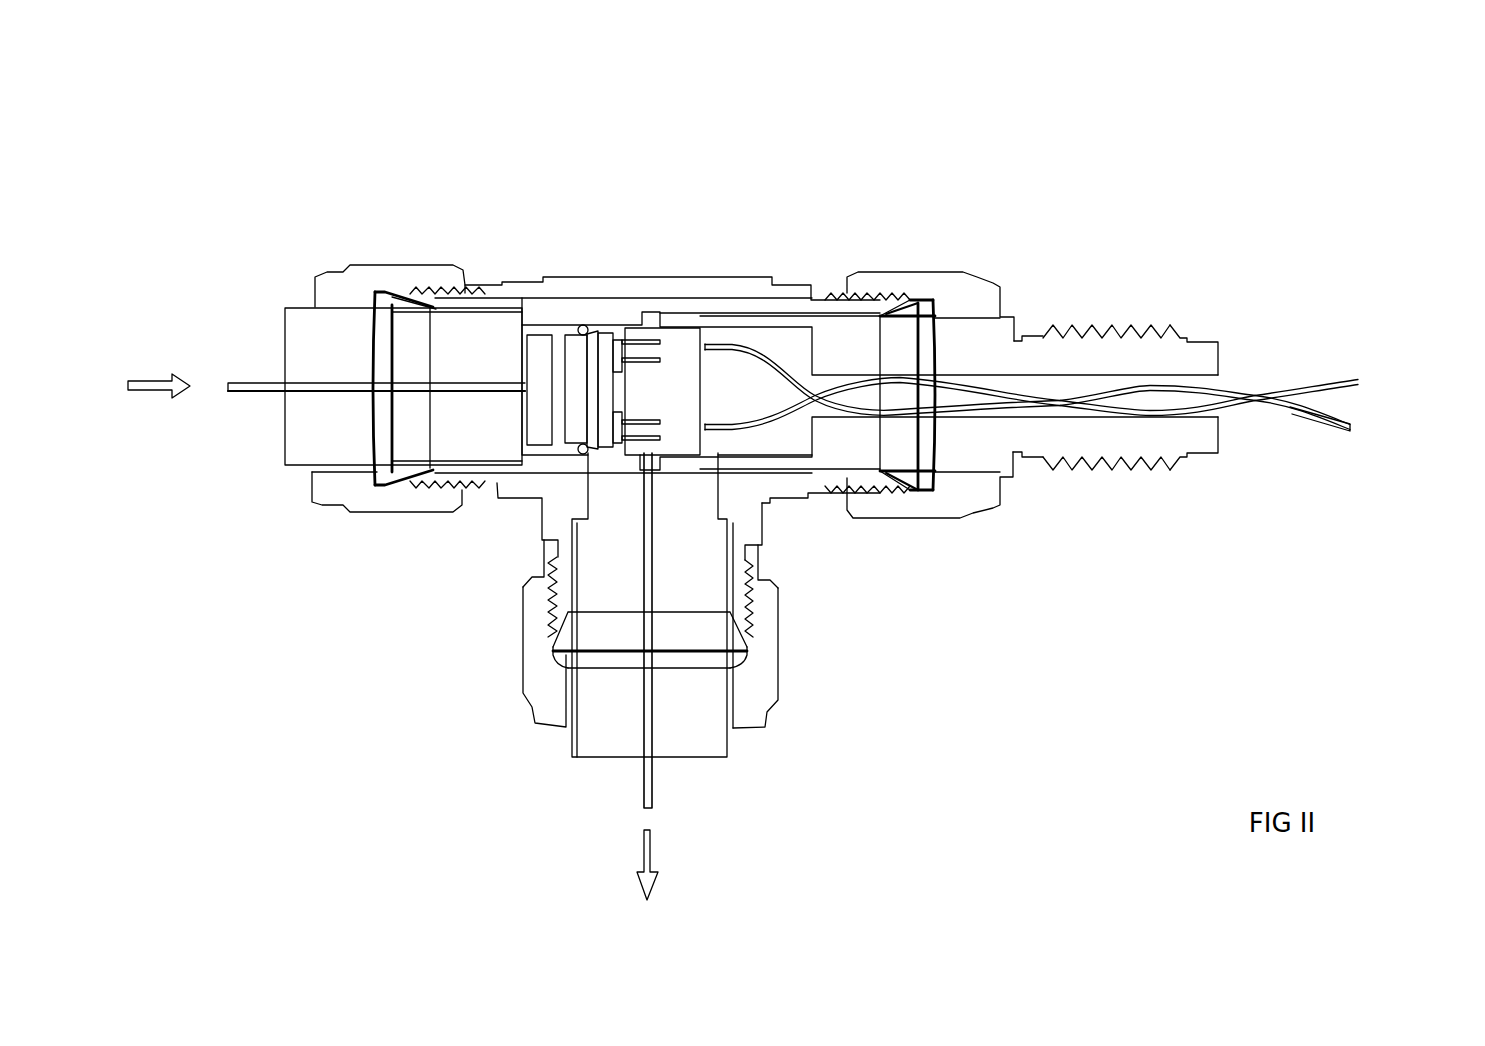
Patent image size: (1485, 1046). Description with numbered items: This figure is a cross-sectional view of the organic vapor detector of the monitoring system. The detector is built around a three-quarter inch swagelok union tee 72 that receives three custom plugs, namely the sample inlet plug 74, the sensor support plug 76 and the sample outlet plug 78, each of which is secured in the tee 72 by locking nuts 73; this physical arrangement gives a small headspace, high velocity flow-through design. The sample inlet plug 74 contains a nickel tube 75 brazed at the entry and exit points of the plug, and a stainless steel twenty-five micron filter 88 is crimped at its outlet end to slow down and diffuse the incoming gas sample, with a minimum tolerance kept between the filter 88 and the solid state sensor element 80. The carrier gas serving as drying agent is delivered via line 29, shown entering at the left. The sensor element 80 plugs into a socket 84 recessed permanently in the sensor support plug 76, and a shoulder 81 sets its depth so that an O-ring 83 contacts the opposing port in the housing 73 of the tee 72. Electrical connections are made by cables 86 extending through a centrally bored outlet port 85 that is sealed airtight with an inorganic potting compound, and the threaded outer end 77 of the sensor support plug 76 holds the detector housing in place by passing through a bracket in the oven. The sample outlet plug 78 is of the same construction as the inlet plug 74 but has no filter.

The line 29 is at (157, 370).
The swagelok union tee 72 is at (540, 555).
The locking nuts 73 is at (933, 268).
The sample inlet plug 74 is at (292, 305).
The nickel tube 75 is at (267, 398).
The sensor support plug 76 is at (1112, 322).
The outer end 77 is at (1198, 414).
The sample outlet plug 78 is at (745, 742).
The solid state sensor element 80 is at (612, 333).
The shoulder 81 is at (577, 445).
The O-ring 83 is at (587, 322).
The socket 84 is at (672, 333).
The outlet port 85 is at (1240, 385).
The cables 86 is at (1330, 430).
The filter 88 is at (538, 343).